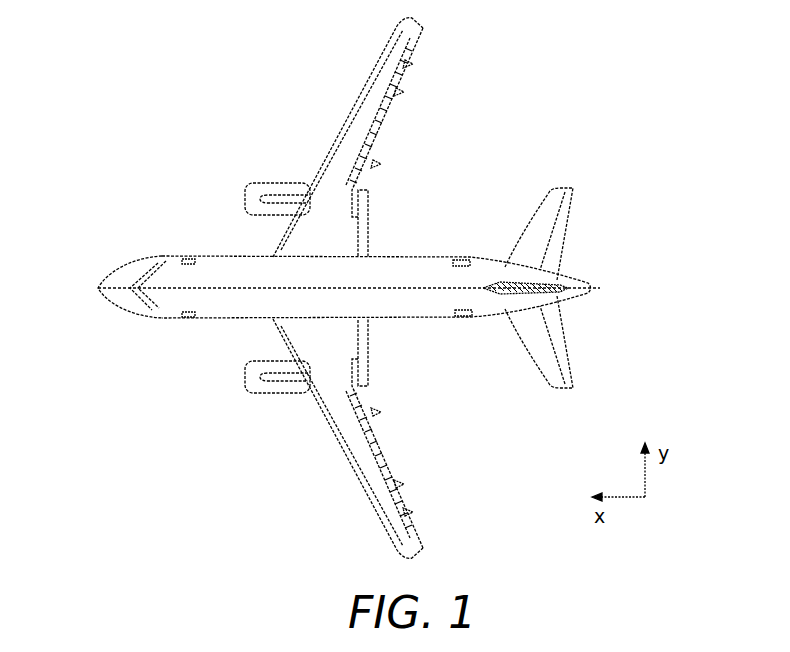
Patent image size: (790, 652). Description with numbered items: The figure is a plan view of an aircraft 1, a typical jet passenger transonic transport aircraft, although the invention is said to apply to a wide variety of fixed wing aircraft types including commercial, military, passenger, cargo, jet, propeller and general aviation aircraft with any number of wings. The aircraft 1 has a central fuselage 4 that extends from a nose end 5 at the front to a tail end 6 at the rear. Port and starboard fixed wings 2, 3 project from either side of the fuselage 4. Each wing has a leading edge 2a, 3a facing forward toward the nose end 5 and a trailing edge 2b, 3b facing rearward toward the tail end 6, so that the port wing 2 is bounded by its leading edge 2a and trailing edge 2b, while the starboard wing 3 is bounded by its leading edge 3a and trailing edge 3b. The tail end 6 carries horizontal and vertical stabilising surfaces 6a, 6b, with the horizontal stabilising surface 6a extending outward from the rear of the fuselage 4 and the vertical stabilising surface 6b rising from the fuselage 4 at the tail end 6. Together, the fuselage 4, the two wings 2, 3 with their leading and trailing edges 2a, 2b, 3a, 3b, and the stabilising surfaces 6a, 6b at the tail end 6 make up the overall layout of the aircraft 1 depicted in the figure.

The aircraft 1 is at (350, 288).
The port fixed wing 2 is at (363, 137).
The leading edge 2a is at (348, 120).
The trailing edge 2b is at (383, 143).
The starboard fixed wing 3 is at (361, 438).
The leading edge 3a is at (338, 443).
The trailing edge 3b is at (392, 460).
The fuselage 4 is at (421, 260).
The nose end 5 is at (100, 267).
The tail end 6 is at (553, 280).
The horizontal stabilising surface 6a is at (555, 207).
The vertical stabilising surface 6b is at (548, 294).